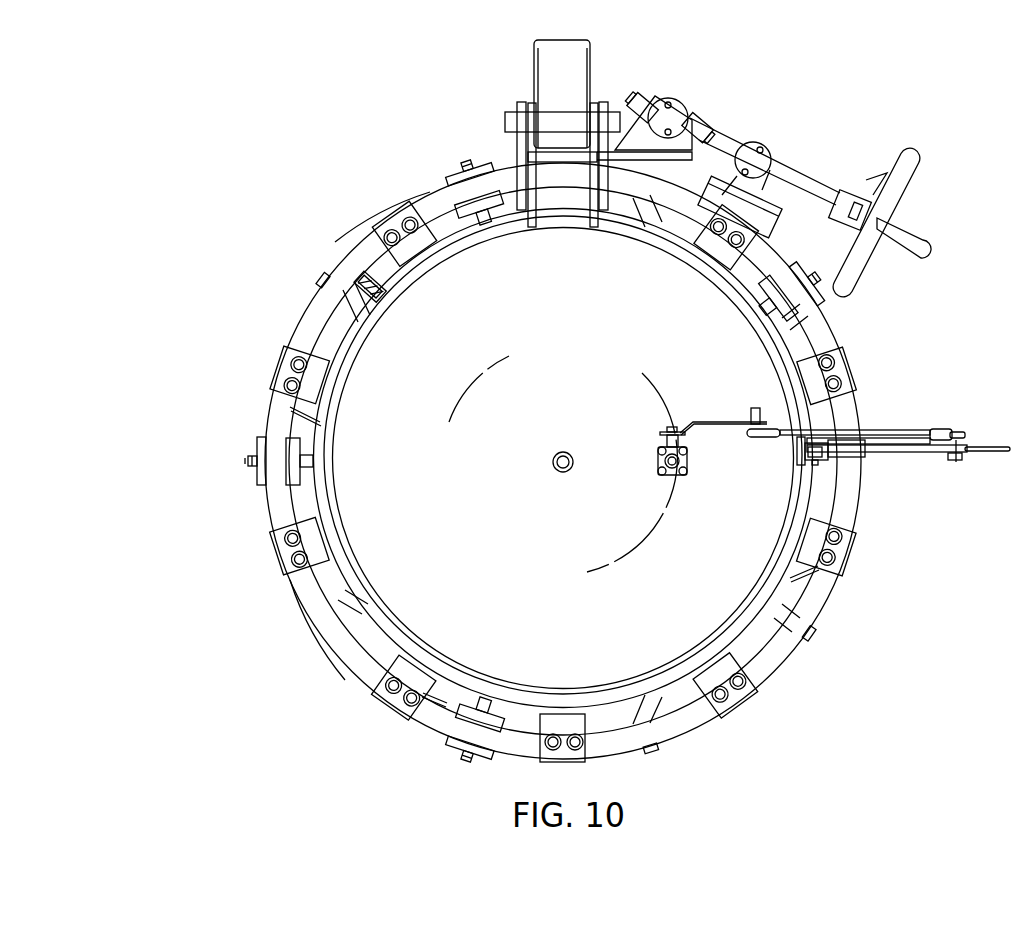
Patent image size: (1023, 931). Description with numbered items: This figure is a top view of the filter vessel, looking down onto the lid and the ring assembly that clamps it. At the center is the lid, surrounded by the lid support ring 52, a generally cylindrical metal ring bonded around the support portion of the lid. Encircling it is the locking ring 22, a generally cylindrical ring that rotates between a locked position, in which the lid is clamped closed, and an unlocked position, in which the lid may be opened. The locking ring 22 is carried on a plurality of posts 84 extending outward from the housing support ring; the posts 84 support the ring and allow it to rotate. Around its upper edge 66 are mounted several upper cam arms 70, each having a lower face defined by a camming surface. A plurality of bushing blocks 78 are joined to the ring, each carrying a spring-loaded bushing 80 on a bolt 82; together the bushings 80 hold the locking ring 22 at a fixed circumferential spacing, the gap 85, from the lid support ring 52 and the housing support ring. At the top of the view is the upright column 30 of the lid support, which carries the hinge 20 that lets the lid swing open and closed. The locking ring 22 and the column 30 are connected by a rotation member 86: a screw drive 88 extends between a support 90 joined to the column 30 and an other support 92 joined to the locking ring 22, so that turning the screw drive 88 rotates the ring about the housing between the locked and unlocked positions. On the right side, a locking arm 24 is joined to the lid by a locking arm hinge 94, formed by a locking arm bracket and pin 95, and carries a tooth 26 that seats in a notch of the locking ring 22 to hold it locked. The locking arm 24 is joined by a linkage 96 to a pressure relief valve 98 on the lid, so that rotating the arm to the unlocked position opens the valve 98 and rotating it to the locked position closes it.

The hinge 20 is at (518, 192).
The locking ring 22 is at (312, 313).
The locking arm 24 is at (937, 455).
The tooth 26 is at (865, 457).
The upright column 30 is at (592, 52).
The lid support ring 52 is at (358, 243).
The upper edge 66 is at (300, 602).
The upper cam arm 70 is at (735, 682).
The bushing block 78 is at (262, 488).
The spring-loaded bushing 80 is at (306, 458).
The bolt 82 is at (248, 461).
The post 84 is at (317, 276).
The gap 85 is at (302, 405).
The rotation member 86 is at (764, 171).
The screw drive 88 is at (812, 186).
The support 90 is at (674, 102).
The other support 92 is at (770, 160).
The locking arm hinge 94 is at (865, 453).
The locking arm bracket and pin 95 is at (817, 463).
The linkage 96 is at (900, 432).
The pressure relief valve 98 is at (672, 475).